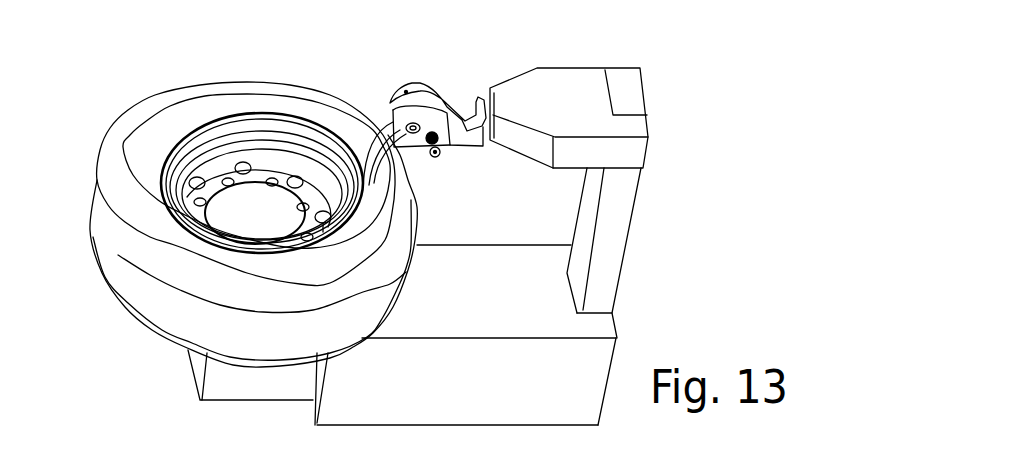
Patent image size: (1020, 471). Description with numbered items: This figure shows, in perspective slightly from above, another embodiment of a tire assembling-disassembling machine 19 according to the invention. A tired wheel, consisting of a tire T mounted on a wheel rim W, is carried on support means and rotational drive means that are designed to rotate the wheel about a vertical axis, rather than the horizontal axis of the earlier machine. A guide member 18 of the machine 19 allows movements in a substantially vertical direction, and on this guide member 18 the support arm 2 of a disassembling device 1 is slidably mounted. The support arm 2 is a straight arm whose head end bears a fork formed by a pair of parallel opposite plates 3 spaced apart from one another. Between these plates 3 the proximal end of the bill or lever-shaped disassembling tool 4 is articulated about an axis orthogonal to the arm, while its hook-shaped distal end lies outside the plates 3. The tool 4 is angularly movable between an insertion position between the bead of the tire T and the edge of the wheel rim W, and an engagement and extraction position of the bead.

The disassembling device 1 is at (420, 153).
The support arm 2 is at (519, 92).
The parallel opposite plates 3 is at (428, 84).
The disassembling tool 4 is at (378, 125).
The guide member 18 is at (610, 235).
The assembling-disassembling machine 19 is at (152, 371).
The tire T is at (148, 103).
The wheel rim W is at (218, 163).